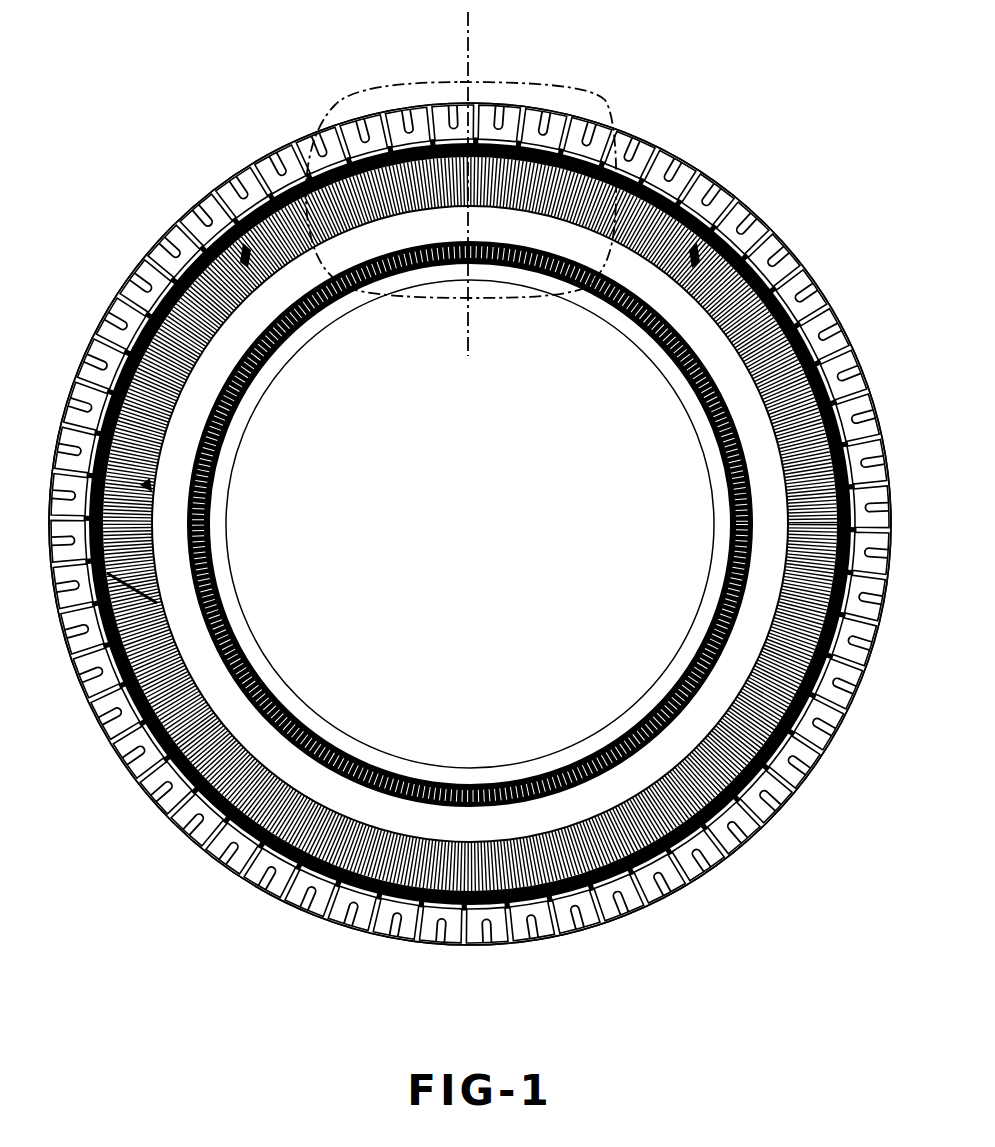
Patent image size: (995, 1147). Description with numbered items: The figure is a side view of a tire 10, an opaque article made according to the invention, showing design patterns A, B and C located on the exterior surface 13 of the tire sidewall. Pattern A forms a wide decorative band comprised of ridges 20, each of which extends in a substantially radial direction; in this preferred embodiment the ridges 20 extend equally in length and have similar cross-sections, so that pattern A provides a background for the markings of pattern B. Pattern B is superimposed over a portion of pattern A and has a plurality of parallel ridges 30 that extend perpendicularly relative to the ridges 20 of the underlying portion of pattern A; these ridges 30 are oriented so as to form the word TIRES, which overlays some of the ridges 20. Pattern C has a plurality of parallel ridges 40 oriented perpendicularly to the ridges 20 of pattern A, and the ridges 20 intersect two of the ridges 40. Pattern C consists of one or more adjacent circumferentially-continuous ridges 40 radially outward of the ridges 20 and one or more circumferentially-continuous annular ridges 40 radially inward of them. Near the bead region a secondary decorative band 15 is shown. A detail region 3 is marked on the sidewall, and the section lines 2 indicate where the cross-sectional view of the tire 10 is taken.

The tire 10 is at (213, 863).
The exterior surface 13 is at (318, 795).
The secondary decorative band 15 is at (573, 770).
The ridges 20 is at (153, 482).
The ridges 30 is at (338, 122).
The ridges 40 is at (157, 573).
The section lines 2— 2 is at (468, 12).
The detail area of FIG. 3 is at (373, 92).
The pattern A is at (211, 202).
The pattern B is at (540, 142).
The pattern C is at (762, 240).